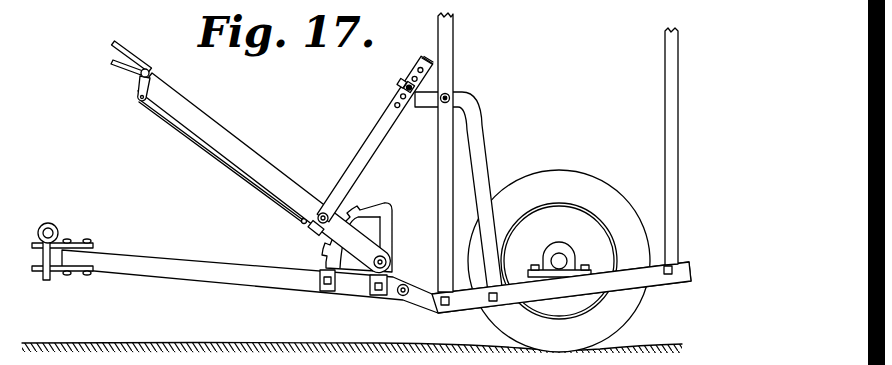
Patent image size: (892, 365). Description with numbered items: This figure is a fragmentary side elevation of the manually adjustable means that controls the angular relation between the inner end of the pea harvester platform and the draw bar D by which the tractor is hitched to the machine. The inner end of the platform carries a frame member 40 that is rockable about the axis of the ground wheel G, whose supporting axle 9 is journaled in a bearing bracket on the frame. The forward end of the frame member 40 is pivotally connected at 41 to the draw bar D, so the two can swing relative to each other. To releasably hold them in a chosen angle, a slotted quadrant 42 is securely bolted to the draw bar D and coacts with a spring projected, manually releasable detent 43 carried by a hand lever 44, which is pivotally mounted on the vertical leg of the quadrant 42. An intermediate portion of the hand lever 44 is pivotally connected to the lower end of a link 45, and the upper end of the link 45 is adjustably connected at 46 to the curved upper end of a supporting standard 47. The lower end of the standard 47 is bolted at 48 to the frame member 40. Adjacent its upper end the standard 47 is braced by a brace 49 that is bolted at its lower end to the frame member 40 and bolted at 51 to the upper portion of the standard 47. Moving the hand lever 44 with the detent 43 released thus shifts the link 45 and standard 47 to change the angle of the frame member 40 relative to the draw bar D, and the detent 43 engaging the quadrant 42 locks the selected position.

The supporting axle 9 is at (562, 257).
The frame member 40 is at (660, 278).
The pivotal connection 41 is at (401, 296).
The slotted quadrant 42 is at (386, 229).
The detent 43 is at (306, 224).
The hand lever 44 is at (275, 169).
The link 45 is at (364, 165).
The adjustable connection 46 is at (403, 87).
The supporting standard 47 is at (479, 157).
The bolt connection 48 is at (492, 303).
The brace 49 is at (447, 62).
The bolt connection 51 is at (451, 98).
The draw bar D is at (148, 262).
The outer ground wheel G is at (573, 186).